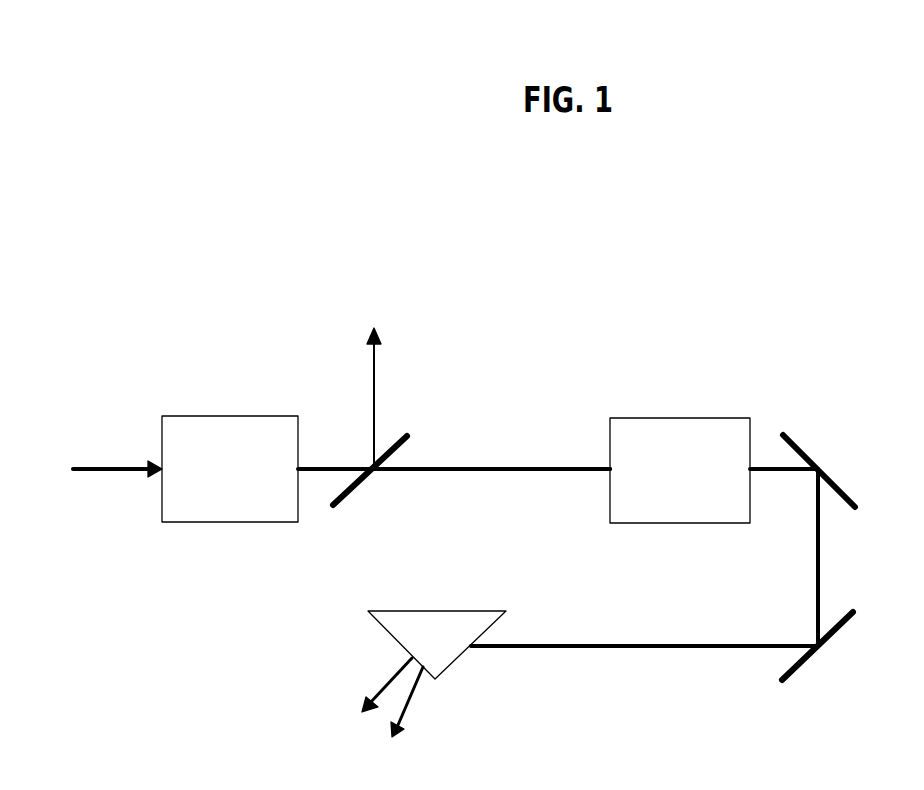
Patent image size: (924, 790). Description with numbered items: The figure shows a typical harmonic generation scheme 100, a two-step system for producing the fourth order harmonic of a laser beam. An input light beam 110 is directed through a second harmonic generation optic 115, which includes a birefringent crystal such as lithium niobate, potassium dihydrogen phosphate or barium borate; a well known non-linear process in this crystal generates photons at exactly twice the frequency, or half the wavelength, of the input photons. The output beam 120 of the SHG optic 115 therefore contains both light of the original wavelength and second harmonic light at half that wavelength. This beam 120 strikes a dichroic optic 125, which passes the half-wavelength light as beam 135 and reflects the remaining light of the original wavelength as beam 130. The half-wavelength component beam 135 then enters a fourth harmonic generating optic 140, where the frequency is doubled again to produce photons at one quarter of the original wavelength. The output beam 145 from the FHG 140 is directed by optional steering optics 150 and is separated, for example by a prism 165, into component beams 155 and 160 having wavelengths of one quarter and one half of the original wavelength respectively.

The harmonic generation scheme 100 is at (100, 120).
The input light beam 110 is at (90, 466).
The second harmonic generation optic 115 is at (195, 522).
The output beam of the SHG optic 120 is at (327, 467).
The dichroic optic 125 is at (335, 507).
The reflected beam 130 is at (373, 378).
The lambda over two component beam 135 is at (453, 468).
The fourth harmonic generating optic 140 is at (680, 418).
The output beam from the FHG 145 is at (818, 538).
The steering optics 150 is at (802, 440).
The component beam 155 is at (403, 722).
The component beam 160 is at (373, 700).
The prism 165 is at (460, 657).